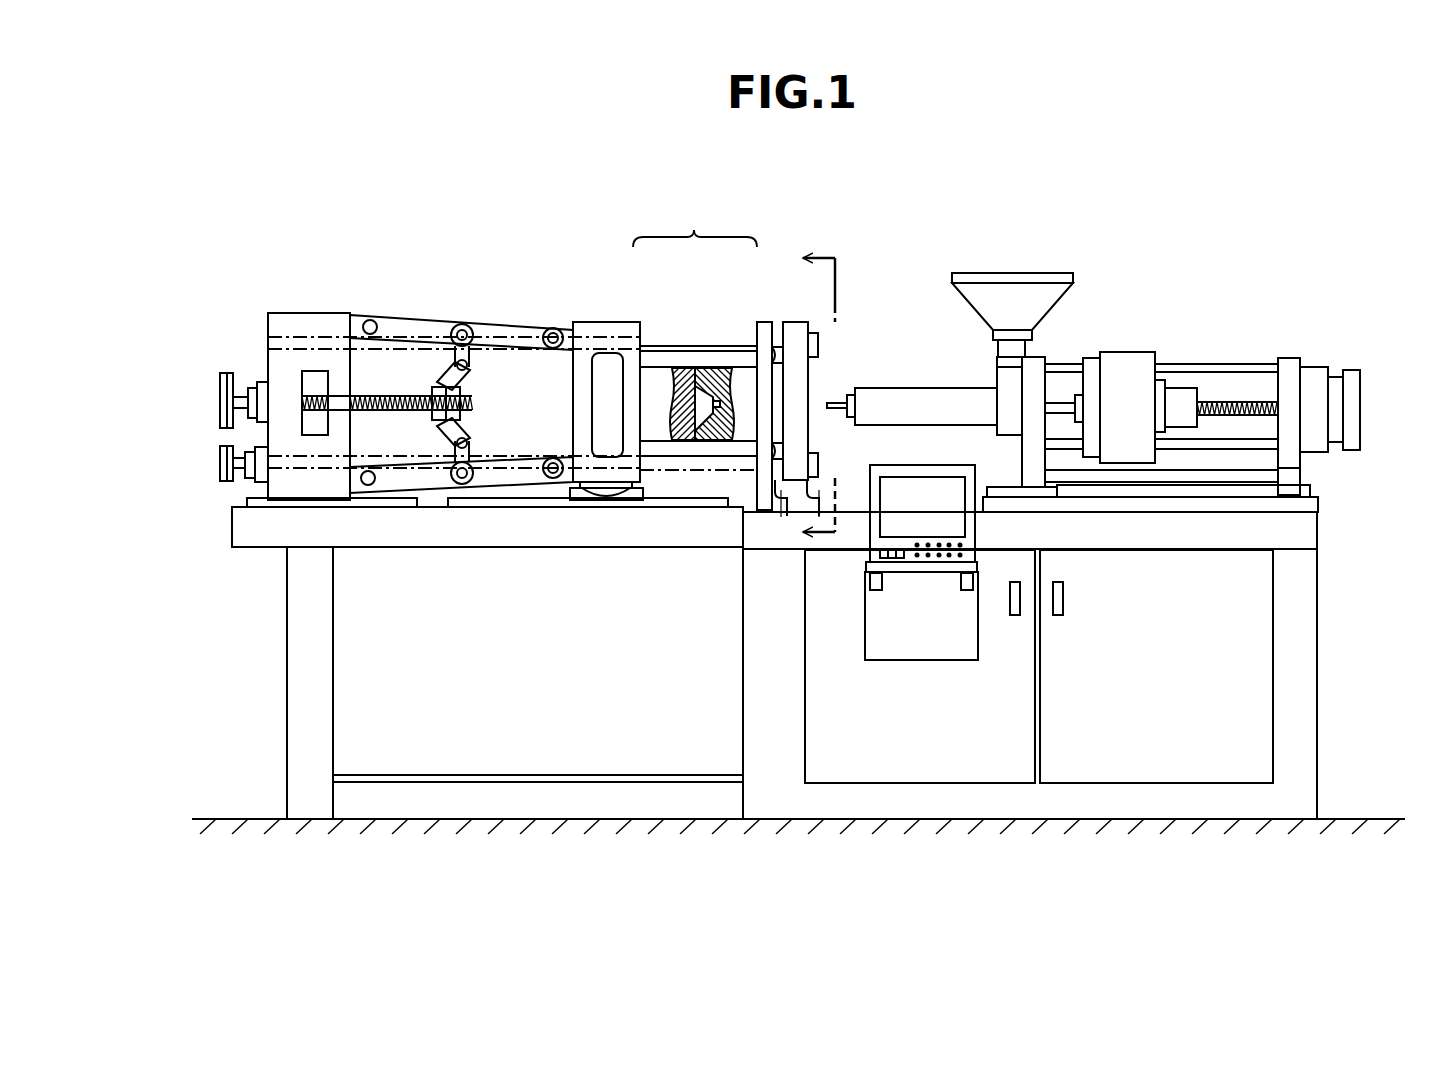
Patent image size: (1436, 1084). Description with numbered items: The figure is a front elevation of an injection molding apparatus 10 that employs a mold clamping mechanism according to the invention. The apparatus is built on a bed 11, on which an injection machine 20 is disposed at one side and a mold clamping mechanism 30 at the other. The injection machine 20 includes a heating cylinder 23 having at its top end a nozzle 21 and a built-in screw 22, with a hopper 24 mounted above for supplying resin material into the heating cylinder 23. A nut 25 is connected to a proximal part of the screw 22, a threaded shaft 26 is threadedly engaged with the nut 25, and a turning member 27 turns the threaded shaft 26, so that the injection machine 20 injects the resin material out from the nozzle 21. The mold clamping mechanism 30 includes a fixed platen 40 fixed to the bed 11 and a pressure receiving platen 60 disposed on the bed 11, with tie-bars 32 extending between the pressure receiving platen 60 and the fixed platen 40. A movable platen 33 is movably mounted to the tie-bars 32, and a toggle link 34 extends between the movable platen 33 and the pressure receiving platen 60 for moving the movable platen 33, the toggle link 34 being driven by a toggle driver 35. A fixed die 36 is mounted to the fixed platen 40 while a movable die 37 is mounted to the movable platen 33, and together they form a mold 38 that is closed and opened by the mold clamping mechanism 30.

The injection molding apparatus 10 is at (1096, 162).
The bed 11 is at (1305, 667).
The injection machine 20 is at (1172, 300).
The nozzle 21 is at (836, 398).
The screw 22 is at (1058, 403).
The heating cylinder 23 is at (913, 388).
The hopper 24 is at (1008, 273).
The nut 25 is at (1178, 402).
The threaded shaft 26 is at (1238, 402).
The turning member 27 is at (1350, 374).
The mold clamping mechanism 30 is at (518, 272).
The tie-bars 32 is at (690, 346).
The movable platen 33 is at (598, 322).
The toggle link 34 is at (424, 317).
The toggle driver 35 is at (258, 486).
The fixed die 36 is at (735, 366).
The movable die 37 is at (648, 366).
The mold 38 is at (694, 230).
The fixed platen 40 is at (774, 315).
The pressure receiving platen 60 is at (292, 313).